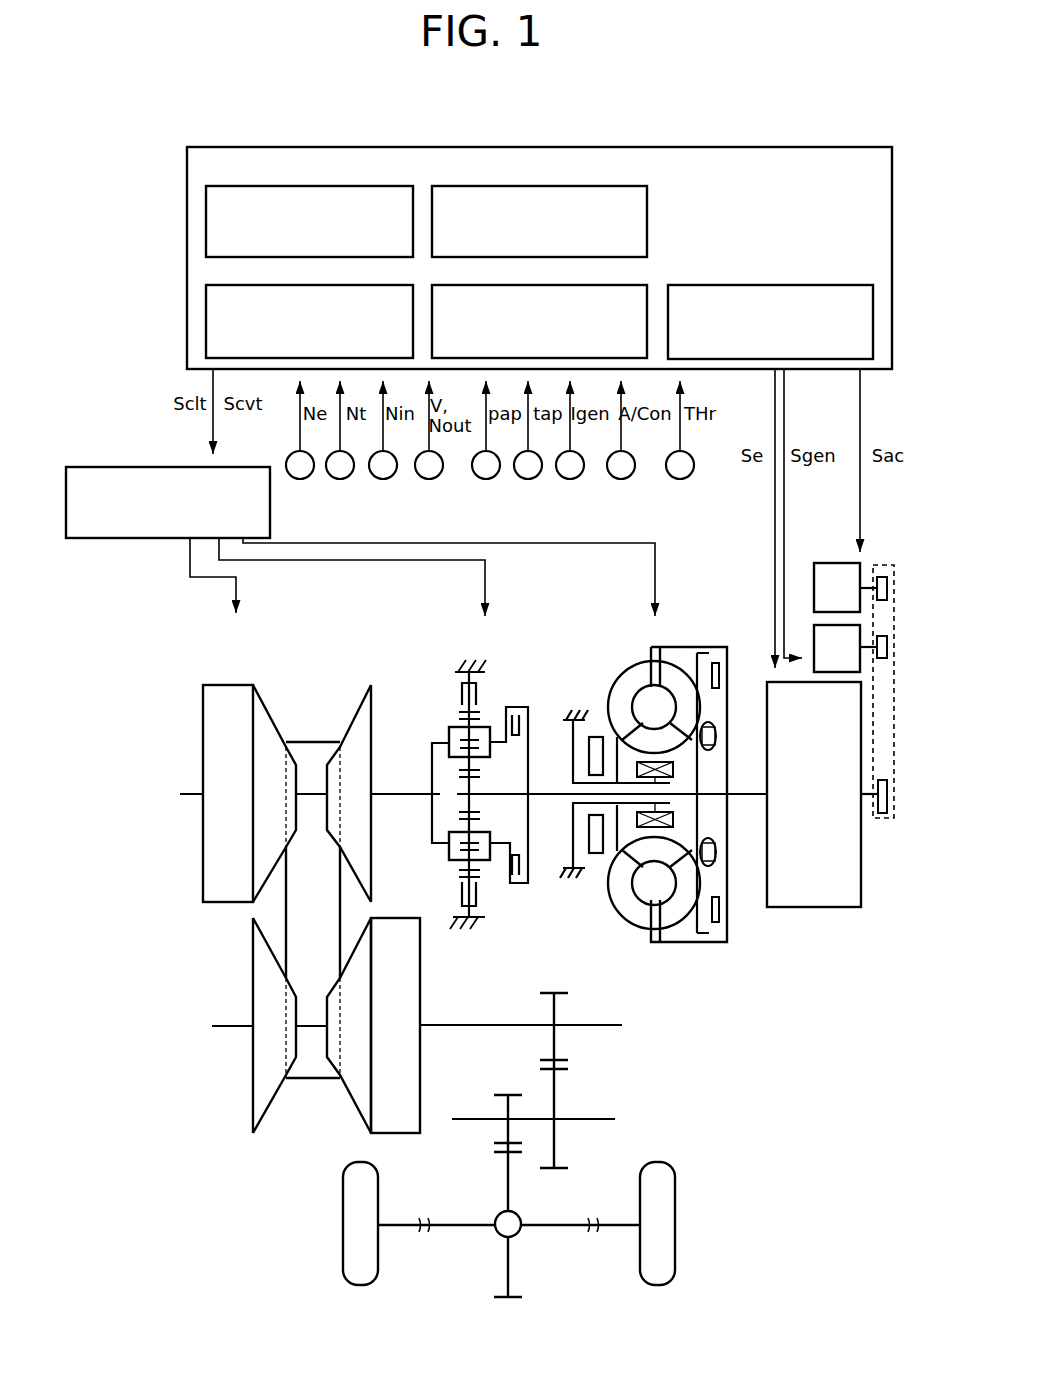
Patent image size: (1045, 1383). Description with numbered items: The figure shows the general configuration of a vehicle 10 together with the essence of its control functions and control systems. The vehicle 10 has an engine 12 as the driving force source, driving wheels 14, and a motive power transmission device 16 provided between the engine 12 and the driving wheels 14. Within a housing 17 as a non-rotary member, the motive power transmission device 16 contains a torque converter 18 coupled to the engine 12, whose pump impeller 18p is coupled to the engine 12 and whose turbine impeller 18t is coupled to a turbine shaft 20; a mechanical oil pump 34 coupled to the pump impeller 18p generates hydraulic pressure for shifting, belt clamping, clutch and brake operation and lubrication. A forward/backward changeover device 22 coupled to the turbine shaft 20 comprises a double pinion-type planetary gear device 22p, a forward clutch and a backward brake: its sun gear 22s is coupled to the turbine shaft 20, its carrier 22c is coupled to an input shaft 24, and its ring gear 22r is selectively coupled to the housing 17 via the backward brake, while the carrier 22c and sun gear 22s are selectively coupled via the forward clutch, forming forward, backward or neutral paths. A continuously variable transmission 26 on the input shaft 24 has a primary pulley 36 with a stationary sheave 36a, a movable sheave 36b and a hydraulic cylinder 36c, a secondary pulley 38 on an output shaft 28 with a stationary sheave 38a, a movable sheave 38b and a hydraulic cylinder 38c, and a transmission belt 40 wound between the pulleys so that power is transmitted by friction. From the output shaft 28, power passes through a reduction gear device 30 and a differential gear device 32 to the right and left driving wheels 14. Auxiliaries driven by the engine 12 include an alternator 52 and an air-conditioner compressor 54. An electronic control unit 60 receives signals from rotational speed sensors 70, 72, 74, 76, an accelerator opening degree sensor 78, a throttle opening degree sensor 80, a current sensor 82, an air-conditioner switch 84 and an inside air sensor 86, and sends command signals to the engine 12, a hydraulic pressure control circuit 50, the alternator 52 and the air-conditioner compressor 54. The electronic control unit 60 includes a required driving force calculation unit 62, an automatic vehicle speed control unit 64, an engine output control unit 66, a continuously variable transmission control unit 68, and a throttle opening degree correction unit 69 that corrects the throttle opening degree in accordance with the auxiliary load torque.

The vehicle 10 is at (777, 108).
The engine 12 is at (823, 898).
The driving wheels 14 is at (350, 1252).
The motive power transmission device 16 is at (700, 565).
The housing 17 is at (482, 664).
The torque converter 18 is at (648, 780).
The pump impeller 18p is at (626, 908).
The turbine impeller 18t is at (670, 912).
The turbine shaft 20 is at (546, 803).
The forward/backward changeover device 22 is at (470, 745).
The carrier 22c is at (445, 730).
The planetary gear device 22p is at (470, 645).
The ring gear 22r is at (458, 885).
The sun gear 22s is at (460, 806).
The input shaft 24 is at (393, 792).
The continuously variable transmission 26 is at (463, 886).
The output shaft 28 is at (487, 1030).
The reduction gear device 30 is at (620, 1088).
The differential gear device 32 is at (503, 1230).
The mechanical oil pump 34 is at (596, 740).
The primary pulley 36 is at (463, 806).
The stationary sheave 36a is at (360, 707).
The movable sheave 36b is at (263, 707).
The hydraulic cylinder 36c is at (213, 706).
The secondary pulley 38 is at (316, 1051).
The stationary sheave 38a is at (262, 1091).
The movable sheave 38b is at (356, 1085).
The hydraulic cylinder 38c is at (412, 1005).
The transmission belt 40 is at (313, 742).
The hydraulic pressure control circuit 50 is at (203, 465).
The alternator 52 is at (824, 650).
The air-conditioner compressor 54 is at (824, 583).
The electronic control unit 60 is at (805, 148).
The required driving force calculation unit 62 is at (352, 186).
The automatic vehicle speed control unit 64 is at (352, 285).
The engine output control unit 66 is at (557, 186).
The continuously variable transmission control unit 68 is at (557, 285).
The throttle opening degree correction unit 69 is at (762, 285).
The rotational speed sensor 70 is at (303, 471).
The rotational speed sensor 72 is at (343, 471).
The rotational speed sensor 74 is at (386, 471).
The rotational speed sensor 76 is at (432, 471).
The accelerator opening degree sensor 78 is at (489, 471).
The throttle opening degree sensor 80 is at (531, 471).
The current sensor 82 is at (573, 471).
The air-conditioner switch 84 is at (624, 471).
The inside air sensor 86 is at (683, 471).